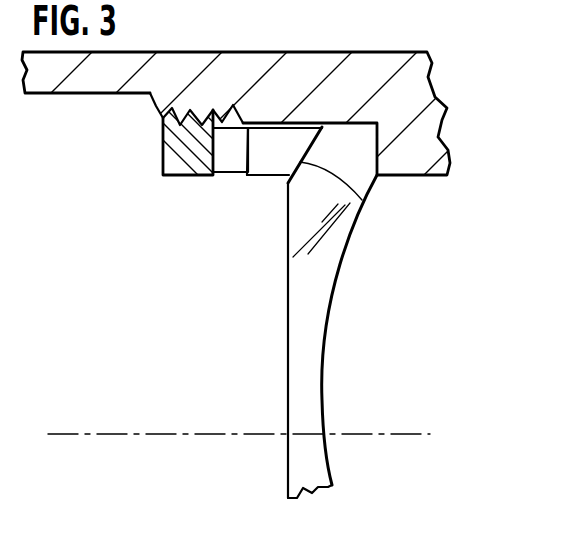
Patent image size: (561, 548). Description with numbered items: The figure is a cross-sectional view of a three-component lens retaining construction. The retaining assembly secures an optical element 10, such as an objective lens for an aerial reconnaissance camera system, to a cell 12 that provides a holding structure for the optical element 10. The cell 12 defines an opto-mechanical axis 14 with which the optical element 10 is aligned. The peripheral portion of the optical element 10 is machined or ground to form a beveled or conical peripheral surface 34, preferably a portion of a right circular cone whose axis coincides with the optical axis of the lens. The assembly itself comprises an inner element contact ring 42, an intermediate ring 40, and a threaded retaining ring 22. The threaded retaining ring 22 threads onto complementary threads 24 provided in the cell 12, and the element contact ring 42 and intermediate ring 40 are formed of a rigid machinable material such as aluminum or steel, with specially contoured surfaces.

The optical element 10 is at (337, 273).
The cell 12 is at (428, 178).
The opto-mechanical axis 14 is at (210, 434).
The threaded retaining ring 22 is at (153, 152).
The complementary threads 24 is at (207, 117).
The beveled or conical peripheral surface 34 is at (363, 201).
The intermediate ring 40 is at (231, 174).
The element contact ring 42 is at (270, 177).